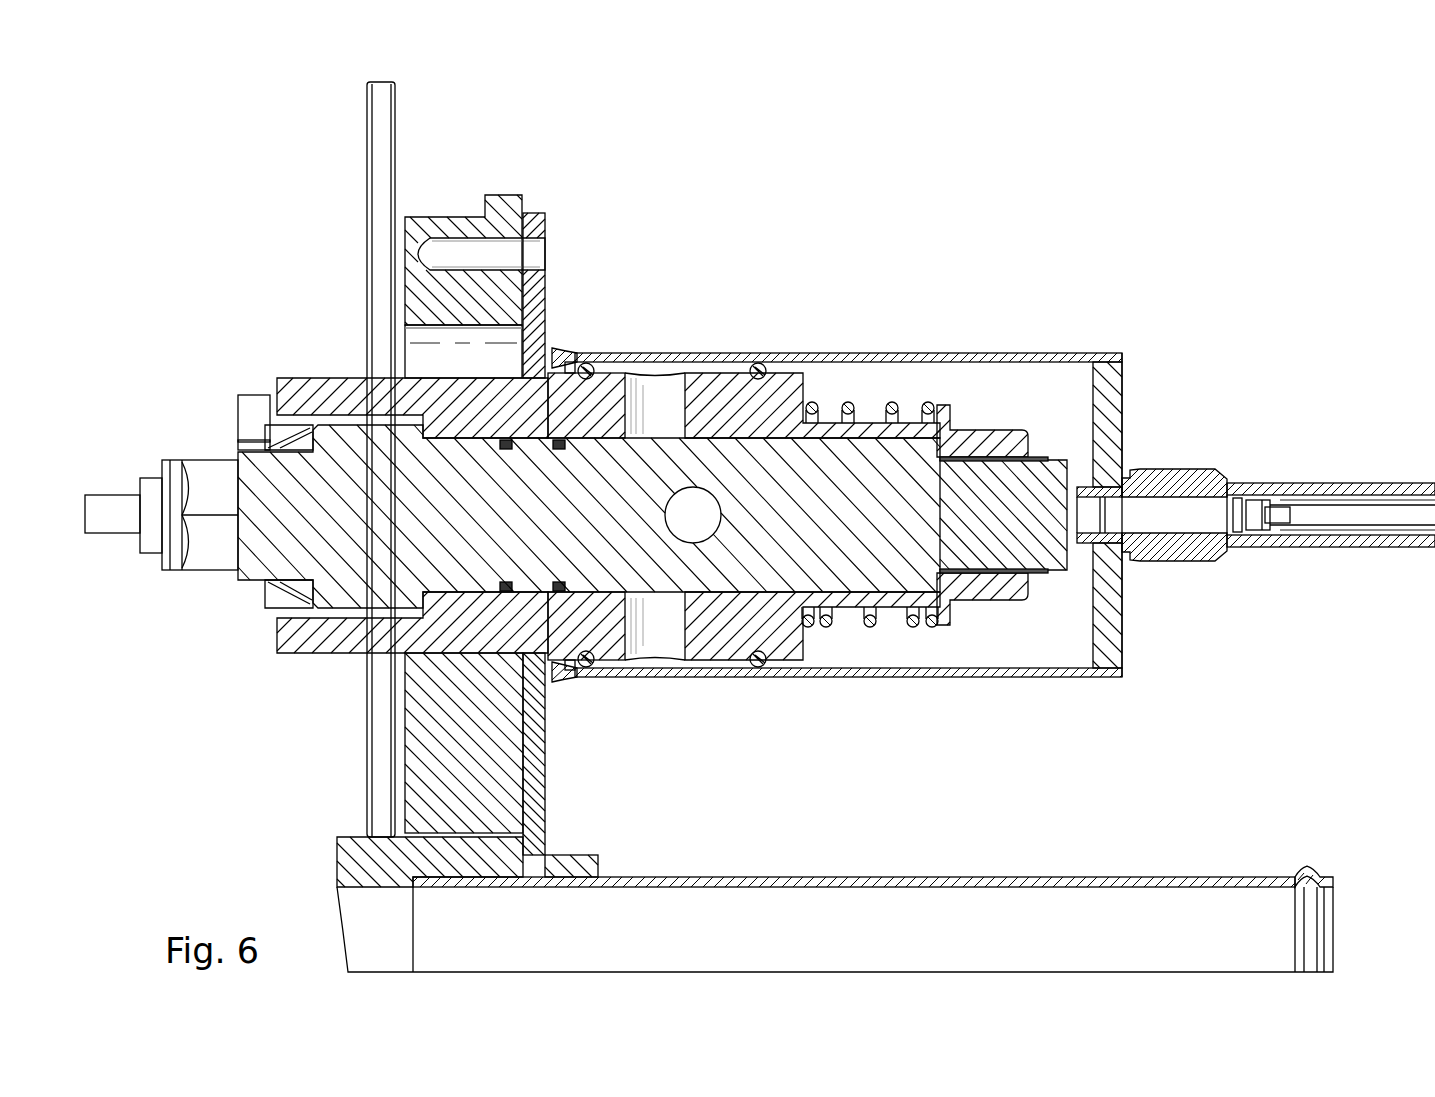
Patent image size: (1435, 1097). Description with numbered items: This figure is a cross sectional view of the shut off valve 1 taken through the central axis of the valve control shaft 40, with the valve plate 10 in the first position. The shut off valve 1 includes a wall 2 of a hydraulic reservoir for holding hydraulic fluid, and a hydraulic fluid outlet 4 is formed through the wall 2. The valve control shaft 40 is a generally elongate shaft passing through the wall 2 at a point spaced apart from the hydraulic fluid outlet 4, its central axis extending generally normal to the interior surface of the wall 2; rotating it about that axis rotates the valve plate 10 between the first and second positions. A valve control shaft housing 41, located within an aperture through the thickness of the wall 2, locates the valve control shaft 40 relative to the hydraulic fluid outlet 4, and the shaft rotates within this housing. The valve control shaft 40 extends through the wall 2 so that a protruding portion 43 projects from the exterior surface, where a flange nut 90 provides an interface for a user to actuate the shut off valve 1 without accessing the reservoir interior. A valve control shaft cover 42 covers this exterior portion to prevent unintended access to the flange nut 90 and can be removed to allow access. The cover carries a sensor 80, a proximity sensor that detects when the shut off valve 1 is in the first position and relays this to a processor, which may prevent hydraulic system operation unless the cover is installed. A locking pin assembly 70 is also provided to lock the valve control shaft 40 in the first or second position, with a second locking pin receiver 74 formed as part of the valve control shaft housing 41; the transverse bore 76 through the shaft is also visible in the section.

The shut off valve 1 is at (1247, 232).
The wall 2 is at (500, 196).
The hydraulic fluid outlet 4 is at (731, 877).
The valve plate 10 is at (396, 102).
The valve control shaft 40 is at (855, 425).
The valve control shaft housing 41 is at (330, 378).
The valve control shaft cover 42 is at (996, 360).
The protruding portion of the valve control shaft 43 is at (903, 457).
The locking pin assembly 70 is at (615, 372).
The second locking pin receiver 74 is at (666, 681).
The transverse bore 76 is at (695, 485).
The sensor 80 is at (1154, 466).
The flange nut 90 is at (1036, 599).